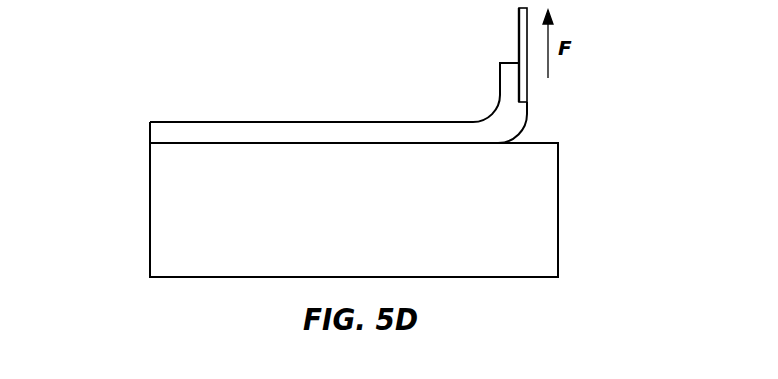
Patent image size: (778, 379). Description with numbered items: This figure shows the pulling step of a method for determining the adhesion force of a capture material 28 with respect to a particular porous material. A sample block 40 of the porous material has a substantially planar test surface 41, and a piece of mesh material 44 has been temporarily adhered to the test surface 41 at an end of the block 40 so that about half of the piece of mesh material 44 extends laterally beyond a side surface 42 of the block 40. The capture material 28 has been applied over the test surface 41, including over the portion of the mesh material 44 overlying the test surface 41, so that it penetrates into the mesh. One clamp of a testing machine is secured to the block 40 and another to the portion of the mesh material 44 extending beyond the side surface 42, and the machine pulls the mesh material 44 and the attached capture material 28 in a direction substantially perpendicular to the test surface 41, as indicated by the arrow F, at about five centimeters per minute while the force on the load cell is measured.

The block 40 is at (150, 222).
The side surface 42 is at (558, 221).
The test surface 41 is at (257, 143).
The capture material 28 is at (365, 132).
The piece of mesh material 44 is at (518, 35).